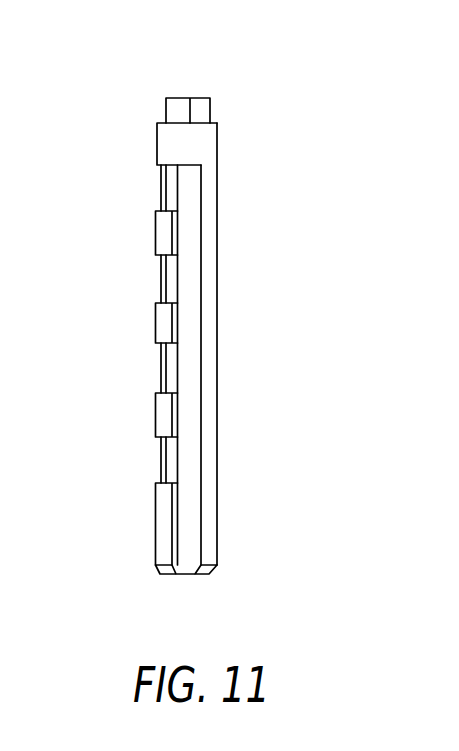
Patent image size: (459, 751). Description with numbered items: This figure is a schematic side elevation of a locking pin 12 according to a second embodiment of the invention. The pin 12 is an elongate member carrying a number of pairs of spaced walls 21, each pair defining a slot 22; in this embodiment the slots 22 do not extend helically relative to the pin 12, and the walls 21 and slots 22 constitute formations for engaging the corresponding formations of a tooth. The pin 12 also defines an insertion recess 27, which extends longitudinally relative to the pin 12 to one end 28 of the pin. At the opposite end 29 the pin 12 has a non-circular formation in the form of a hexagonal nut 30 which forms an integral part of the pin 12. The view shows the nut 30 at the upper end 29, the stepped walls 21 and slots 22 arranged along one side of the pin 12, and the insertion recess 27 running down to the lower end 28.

The pin 12 is at (88, 497).
The spaced walls 21 is at (158, 176).
The slot 22 is at (157, 193).
The insertion recess 27 is at (188, 518).
The end of the pin 28 is at (195, 576).
The opposite end of the pin 29 is at (203, 89).
The hexagonal nut 30 is at (172, 109).